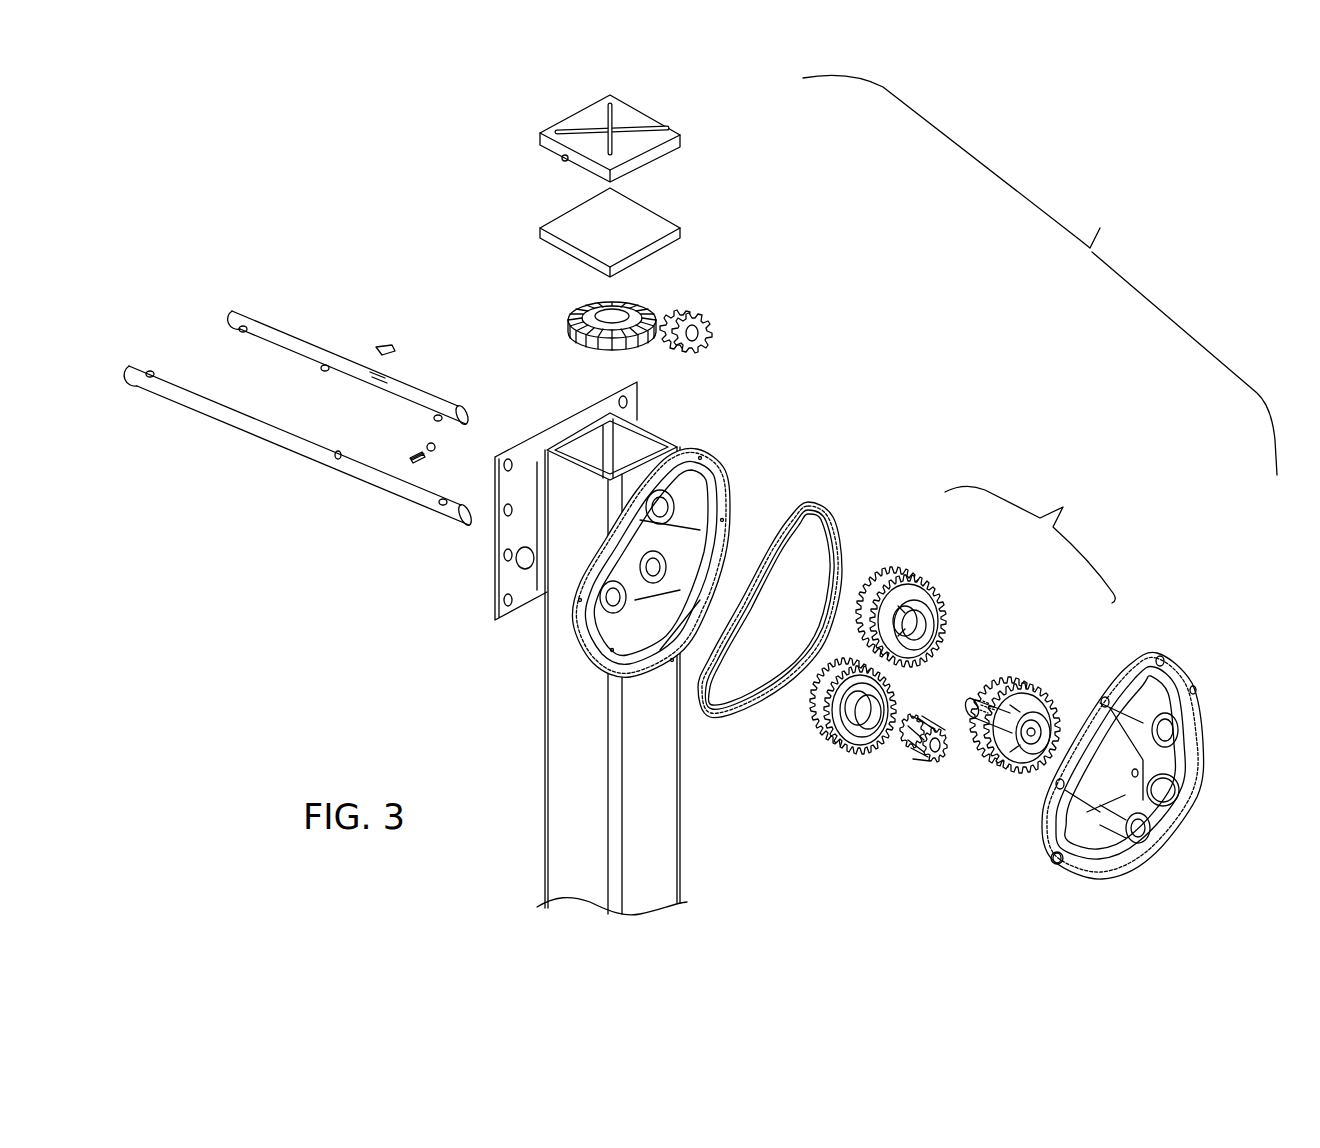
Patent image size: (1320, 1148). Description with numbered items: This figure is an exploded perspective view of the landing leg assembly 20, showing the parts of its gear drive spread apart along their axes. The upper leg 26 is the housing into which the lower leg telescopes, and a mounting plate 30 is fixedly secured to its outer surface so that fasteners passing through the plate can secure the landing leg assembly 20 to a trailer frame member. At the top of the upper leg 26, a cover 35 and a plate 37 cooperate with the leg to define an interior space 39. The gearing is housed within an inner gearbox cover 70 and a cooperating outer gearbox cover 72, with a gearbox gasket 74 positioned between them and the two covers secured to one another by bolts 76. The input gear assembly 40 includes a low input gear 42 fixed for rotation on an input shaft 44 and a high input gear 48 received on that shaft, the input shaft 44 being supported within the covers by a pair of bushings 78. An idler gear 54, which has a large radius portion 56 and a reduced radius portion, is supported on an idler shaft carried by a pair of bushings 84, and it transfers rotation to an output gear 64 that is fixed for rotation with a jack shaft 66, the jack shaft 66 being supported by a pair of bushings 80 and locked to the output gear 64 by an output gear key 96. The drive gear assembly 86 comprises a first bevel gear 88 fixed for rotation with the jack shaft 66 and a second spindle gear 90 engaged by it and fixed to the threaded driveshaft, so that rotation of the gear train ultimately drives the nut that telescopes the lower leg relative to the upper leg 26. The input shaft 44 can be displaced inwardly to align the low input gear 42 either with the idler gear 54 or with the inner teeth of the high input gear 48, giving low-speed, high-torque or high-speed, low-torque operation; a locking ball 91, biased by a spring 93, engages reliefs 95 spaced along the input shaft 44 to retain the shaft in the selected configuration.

The landing leg assembly 20 is at (1040, 275).
The upper leg 26 is at (582, 643).
The mounting plate 30 is at (495, 583).
The cover 35 is at (670, 130).
The plate 37 is at (667, 218).
The interior space 39 is at (584, 444).
The input gear assembly 40 is at (1030, 544).
The low input gear 42 is at (913, 762).
The input shaft 44 is at (299, 446).
The high input gear 48 is at (830, 752).
The idler gear 54 is at (1014, 668).
The large radius portion 56 is at (1032, 692).
The output gear 64 is at (920, 566).
The jack shaft 66 is at (268, 325).
The inner gearbox cover 70 is at (565, 620).
The outer gearbox cover 72 is at (1136, 786).
The gearbox gasket 74 is at (832, 512).
The bolts 76 is at (1056, 866).
The bushings 78 is at (1118, 842).
The bushings 80 is at (686, 500).
The bushings 84 is at (1167, 793).
The drive gear assembly 86 is at (698, 301).
The first bevel gear 88 is at (710, 333).
The second spindle gear 90 is at (640, 300).
The locking ball 91 is at (427, 446).
The spring 93 is at (427, 461).
The reliefs 95 is at (338, 450).
The output gear key 96 is at (387, 340).